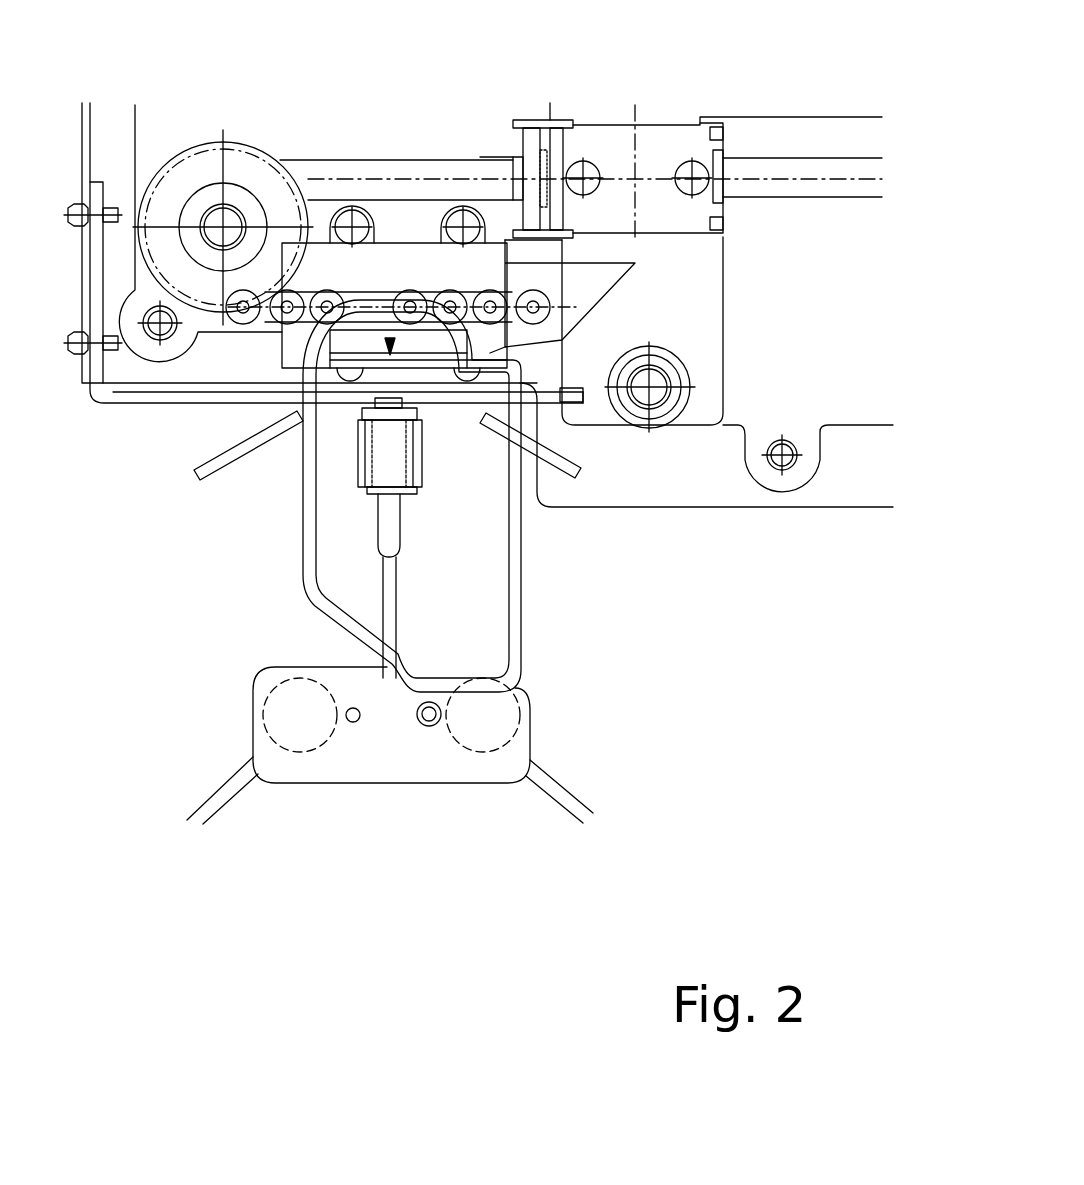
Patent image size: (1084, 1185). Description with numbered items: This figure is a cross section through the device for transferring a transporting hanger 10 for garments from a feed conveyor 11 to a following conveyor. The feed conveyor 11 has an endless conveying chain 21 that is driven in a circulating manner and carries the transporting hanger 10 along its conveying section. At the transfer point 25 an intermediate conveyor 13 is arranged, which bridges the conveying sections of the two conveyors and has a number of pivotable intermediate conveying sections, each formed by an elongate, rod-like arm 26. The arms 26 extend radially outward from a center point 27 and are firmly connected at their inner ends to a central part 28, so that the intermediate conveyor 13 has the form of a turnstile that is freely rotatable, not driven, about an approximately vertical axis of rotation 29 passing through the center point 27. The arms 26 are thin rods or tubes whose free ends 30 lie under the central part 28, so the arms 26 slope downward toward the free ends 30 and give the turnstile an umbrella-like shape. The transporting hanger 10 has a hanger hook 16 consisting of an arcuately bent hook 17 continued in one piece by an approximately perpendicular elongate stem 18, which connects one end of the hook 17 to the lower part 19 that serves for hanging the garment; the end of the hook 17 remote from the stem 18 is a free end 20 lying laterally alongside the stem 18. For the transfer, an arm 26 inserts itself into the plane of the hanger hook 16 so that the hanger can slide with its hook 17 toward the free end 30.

The transporting hanger 10 is at (198, 738).
The feed conveyor 11 is at (312, 320).
The intermediate conveyor 13 is at (280, 488).
The hanger hook 16 is at (300, 615).
The hook 17 is at (428, 300).
The stem 18 is at (308, 493).
The lower part 19 is at (373, 760).
The free end 20 is at (523, 347).
The conveying chain 21 is at (510, 300).
The transfer point 25 is at (390, 342).
The arm 26 is at (273, 425).
The center point 27 is at (360, 472).
The central part 28 is at (358, 448).
The axis of rotation 29 is at (389, 617).
The free end 30 is at (197, 470).